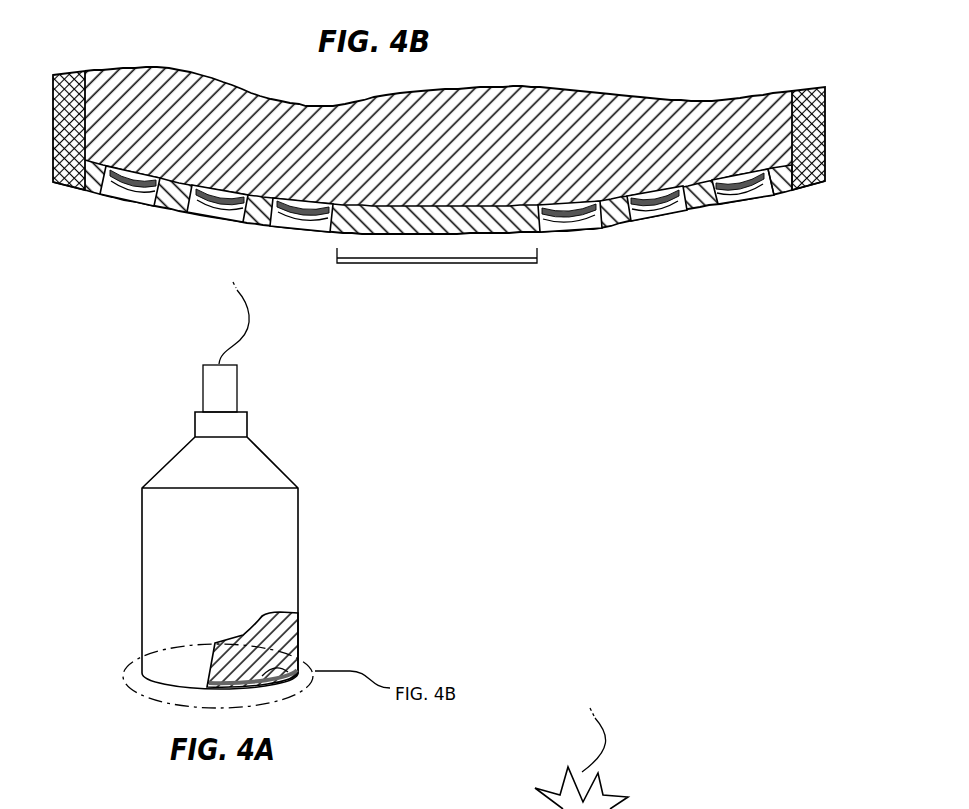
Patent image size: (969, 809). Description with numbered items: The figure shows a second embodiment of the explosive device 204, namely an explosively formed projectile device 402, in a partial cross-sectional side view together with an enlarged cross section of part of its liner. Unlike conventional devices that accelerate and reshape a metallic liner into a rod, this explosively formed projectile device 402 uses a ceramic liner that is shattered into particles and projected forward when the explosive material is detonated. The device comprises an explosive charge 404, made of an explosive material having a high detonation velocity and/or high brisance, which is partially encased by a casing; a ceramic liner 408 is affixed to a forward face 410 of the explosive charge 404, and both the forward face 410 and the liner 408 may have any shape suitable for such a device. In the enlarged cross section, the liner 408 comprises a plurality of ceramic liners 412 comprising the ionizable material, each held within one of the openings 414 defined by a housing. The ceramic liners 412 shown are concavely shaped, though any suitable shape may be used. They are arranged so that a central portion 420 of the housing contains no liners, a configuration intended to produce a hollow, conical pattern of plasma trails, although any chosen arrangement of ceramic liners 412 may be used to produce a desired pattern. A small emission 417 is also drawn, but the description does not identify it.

In FIG. 4A, the explosive device 204 is at (222, 383).
In FIG. 4A, the explosively formed projectile device 402 is at (338, 502).
In FIG. 4B, the explosive charge 404 is at (560, 90).
In FIG. 4A, the explosive charge 404 is at (142, 580).
In FIG. 4B, the ceramic liner 408 is at (708, 213).
In FIG. 4A, the ceramic liner 408 is at (298, 678).
In FIG. 4B, the forward face 410 is at (690, 184).
In FIG. 4A, the forward face 410 is at (277, 680).
In FIG. 4B, the ceramic liners 412 is at (645, 200).
In FIG. 4B, the openings 414 is at (755, 168).
In FIG. 4A, the light emission 417 is at (602, 790).
In FIG. 4B, the central portion 420 is at (483, 263).